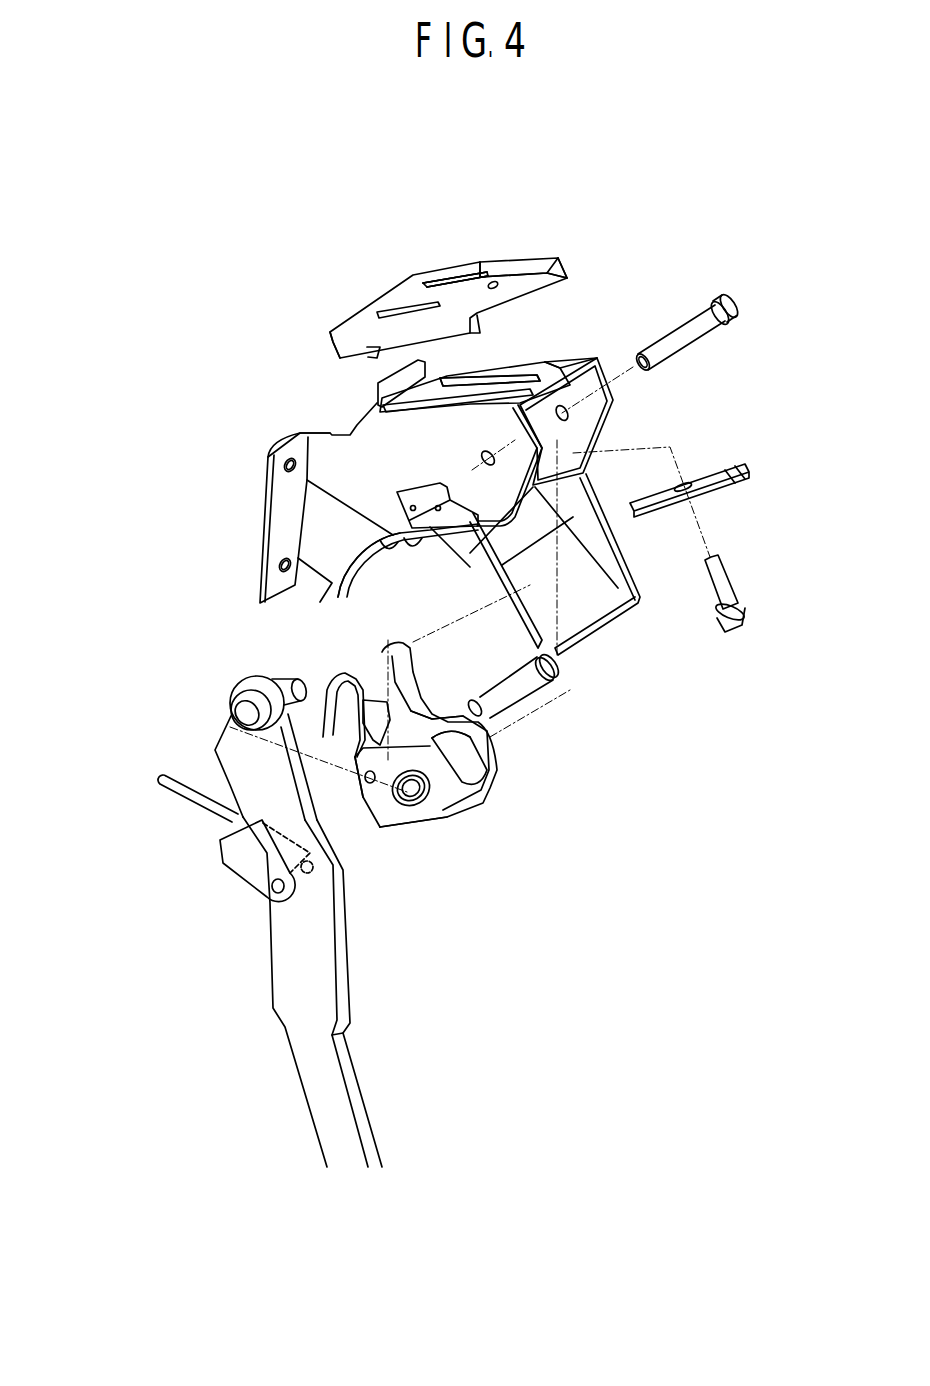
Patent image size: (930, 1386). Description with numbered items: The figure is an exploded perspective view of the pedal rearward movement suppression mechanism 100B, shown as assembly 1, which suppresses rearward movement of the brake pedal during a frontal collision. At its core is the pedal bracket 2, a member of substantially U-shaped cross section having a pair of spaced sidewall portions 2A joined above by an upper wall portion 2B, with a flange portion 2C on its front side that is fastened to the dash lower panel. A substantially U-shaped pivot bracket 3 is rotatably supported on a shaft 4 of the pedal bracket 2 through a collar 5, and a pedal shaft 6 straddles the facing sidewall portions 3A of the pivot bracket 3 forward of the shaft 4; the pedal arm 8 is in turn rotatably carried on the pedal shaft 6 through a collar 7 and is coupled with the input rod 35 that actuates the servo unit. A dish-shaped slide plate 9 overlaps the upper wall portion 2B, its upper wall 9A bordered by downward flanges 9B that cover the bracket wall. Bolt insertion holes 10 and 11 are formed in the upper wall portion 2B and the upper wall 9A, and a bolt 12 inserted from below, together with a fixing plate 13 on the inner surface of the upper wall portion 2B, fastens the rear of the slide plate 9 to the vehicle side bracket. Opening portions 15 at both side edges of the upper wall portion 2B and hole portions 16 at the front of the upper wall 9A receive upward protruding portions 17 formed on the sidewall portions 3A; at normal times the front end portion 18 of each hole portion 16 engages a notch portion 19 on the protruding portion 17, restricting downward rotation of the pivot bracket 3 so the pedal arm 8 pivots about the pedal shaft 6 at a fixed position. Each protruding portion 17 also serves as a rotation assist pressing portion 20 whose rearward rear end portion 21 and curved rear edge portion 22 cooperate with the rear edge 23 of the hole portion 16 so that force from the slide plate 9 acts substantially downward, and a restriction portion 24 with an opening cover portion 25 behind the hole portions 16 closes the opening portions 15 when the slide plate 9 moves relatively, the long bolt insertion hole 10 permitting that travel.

The pedal device 1 is at (690, 222).
The pedal bracket 2 is at (433, 521).
The sidewall portions 2A is at (312, 448).
The upper wall portion 2B is at (580, 357).
The flange portion 2C is at (272, 537).
The pivot bracket 3 is at (402, 760).
The sidewall portions 3A is at (485, 768).
The shaft 4 is at (697, 345).
The collar 5 is at (455, 815).
The pedal shaft 6 is at (523, 687).
The collar 7 is at (243, 690).
The pedal arm 8 is at (333, 987).
The slide plate 9 is at (441, 285).
The upper wall 9A is at (543, 253).
The flanges 9B is at (337, 350).
The bolt insertion hole 10 is at (547, 357).
The bolt insertion hole 11 is at (500, 283).
The bolt 12 is at (733, 570).
The fixing plate 13 is at (710, 470).
The opening portions 15 is at (517, 360).
The hole portions 16 is at (397, 307).
The protruding portions 17 is at (327, 692).
The front end portion 18 is at (425, 273).
The notch portion 19 is at (350, 743).
The rotation assist pressing portion 20 is at (369, 646).
The rear end portion 21 is at (350, 680).
The rear edge portion 22 is at (420, 690).
The rear edge 23 is at (475, 272).
The restriction portion 24 is at (497, 277).
The opening cover portion 25 is at (523, 353).
The input rod 35 is at (183, 828).
The pedal rearward movement suppression mechanism 100B is at (657, 680).